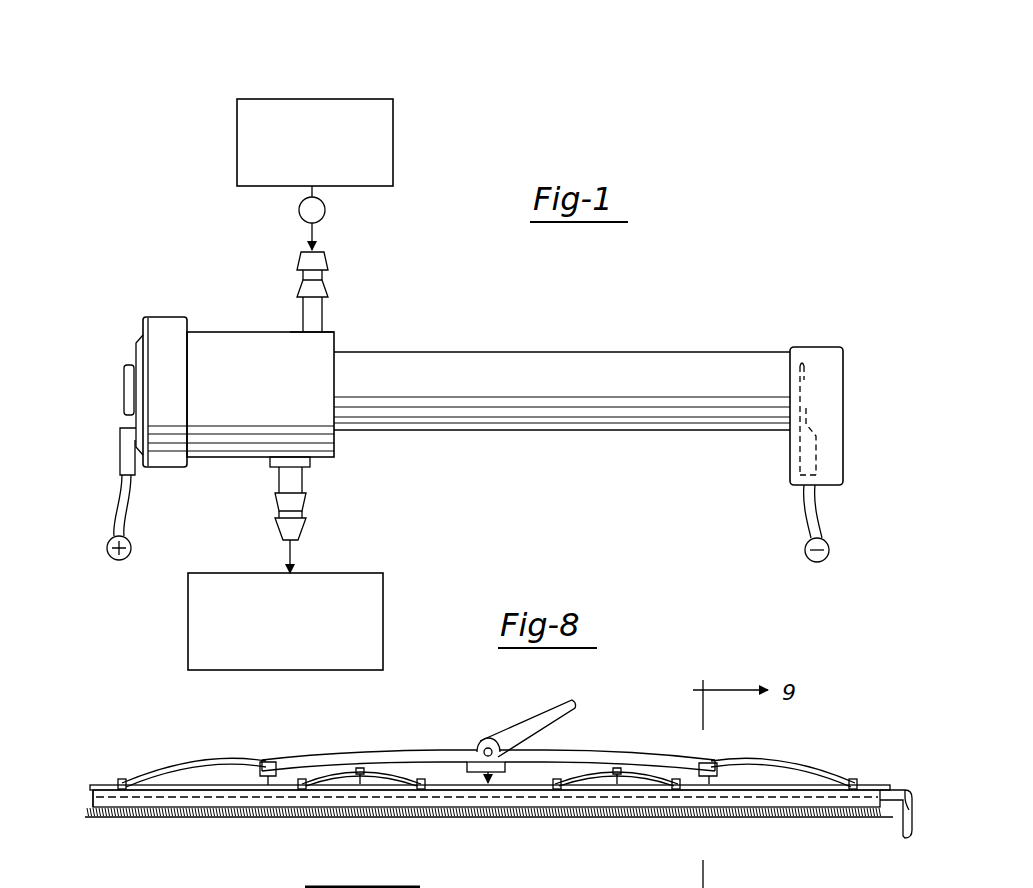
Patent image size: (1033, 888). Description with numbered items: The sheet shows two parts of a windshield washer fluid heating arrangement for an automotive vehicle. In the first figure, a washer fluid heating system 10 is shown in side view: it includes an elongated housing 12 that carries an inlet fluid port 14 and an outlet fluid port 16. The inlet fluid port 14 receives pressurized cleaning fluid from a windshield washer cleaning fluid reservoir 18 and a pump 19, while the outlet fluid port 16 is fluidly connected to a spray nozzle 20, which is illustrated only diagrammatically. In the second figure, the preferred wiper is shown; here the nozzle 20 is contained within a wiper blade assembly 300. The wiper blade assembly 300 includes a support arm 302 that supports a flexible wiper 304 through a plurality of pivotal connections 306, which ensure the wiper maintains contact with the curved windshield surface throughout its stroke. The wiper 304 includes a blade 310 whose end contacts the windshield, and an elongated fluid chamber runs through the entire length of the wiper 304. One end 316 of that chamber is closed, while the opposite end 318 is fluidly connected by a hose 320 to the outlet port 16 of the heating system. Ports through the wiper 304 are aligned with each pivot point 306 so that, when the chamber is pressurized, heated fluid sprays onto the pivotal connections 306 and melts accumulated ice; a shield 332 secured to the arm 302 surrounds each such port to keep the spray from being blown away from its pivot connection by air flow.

In FIG. 1, the washer fluid heating system 10 is at (593, 332).
In FIG. 1, the elongated housing 12 is at (470, 357).
In FIG. 1, the inlet fluid port 14 is at (325, 258).
In FIG. 1, the outlet fluid port 16 is at (300, 524).
In FIG. 1, the windshield washer cleaning fluid reservoir 18 is at (308, 99).
In FIG. 1, the pump 19 is at (299, 211).
In FIG. 1, the spray nozzle 20 is at (188, 640).
In FIG. 8, the wiper blade assembly 300 is at (474, 742).
In FIG. 8, the support arm 302 is at (372, 752).
In FIG. 8, the flexible wiper 304 is at (616, 818).
In FIG. 8, the pivotal connections 306 is at (265, 765).
In FIG. 8, the blade 310 is at (187, 819).
In FIG. 8, the closed end of chamber 316 is at (93, 797).
In FIG. 8, the opposite end of chamber 318 is at (890, 785).
In FIG. 8, the hose 320 is at (895, 828).
In FIG. 8, the shield 332 is at (265, 780).